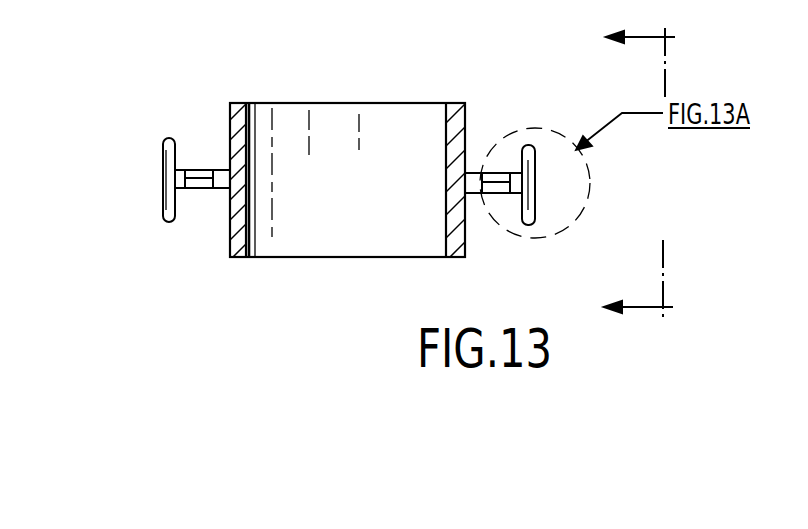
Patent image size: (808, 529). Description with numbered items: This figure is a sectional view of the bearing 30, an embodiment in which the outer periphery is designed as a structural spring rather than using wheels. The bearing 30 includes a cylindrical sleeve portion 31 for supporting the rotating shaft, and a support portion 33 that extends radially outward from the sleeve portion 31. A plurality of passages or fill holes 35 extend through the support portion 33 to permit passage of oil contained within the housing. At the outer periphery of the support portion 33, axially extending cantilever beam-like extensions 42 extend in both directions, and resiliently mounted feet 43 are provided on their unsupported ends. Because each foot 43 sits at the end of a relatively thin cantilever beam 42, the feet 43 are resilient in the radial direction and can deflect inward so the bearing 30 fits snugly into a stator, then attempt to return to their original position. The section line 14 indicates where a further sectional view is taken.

The section line 14 is at (637, 159).
The bearing 30 is at (445, 80).
The cylindrical sleeve portion 31 is at (243, 125).
The support portion 33 is at (177, 170).
The fill holes 35 is at (190, 190).
The cantilever beam-like extensions 42 is at (538, 218).
The feet 43 is at (536, 148).